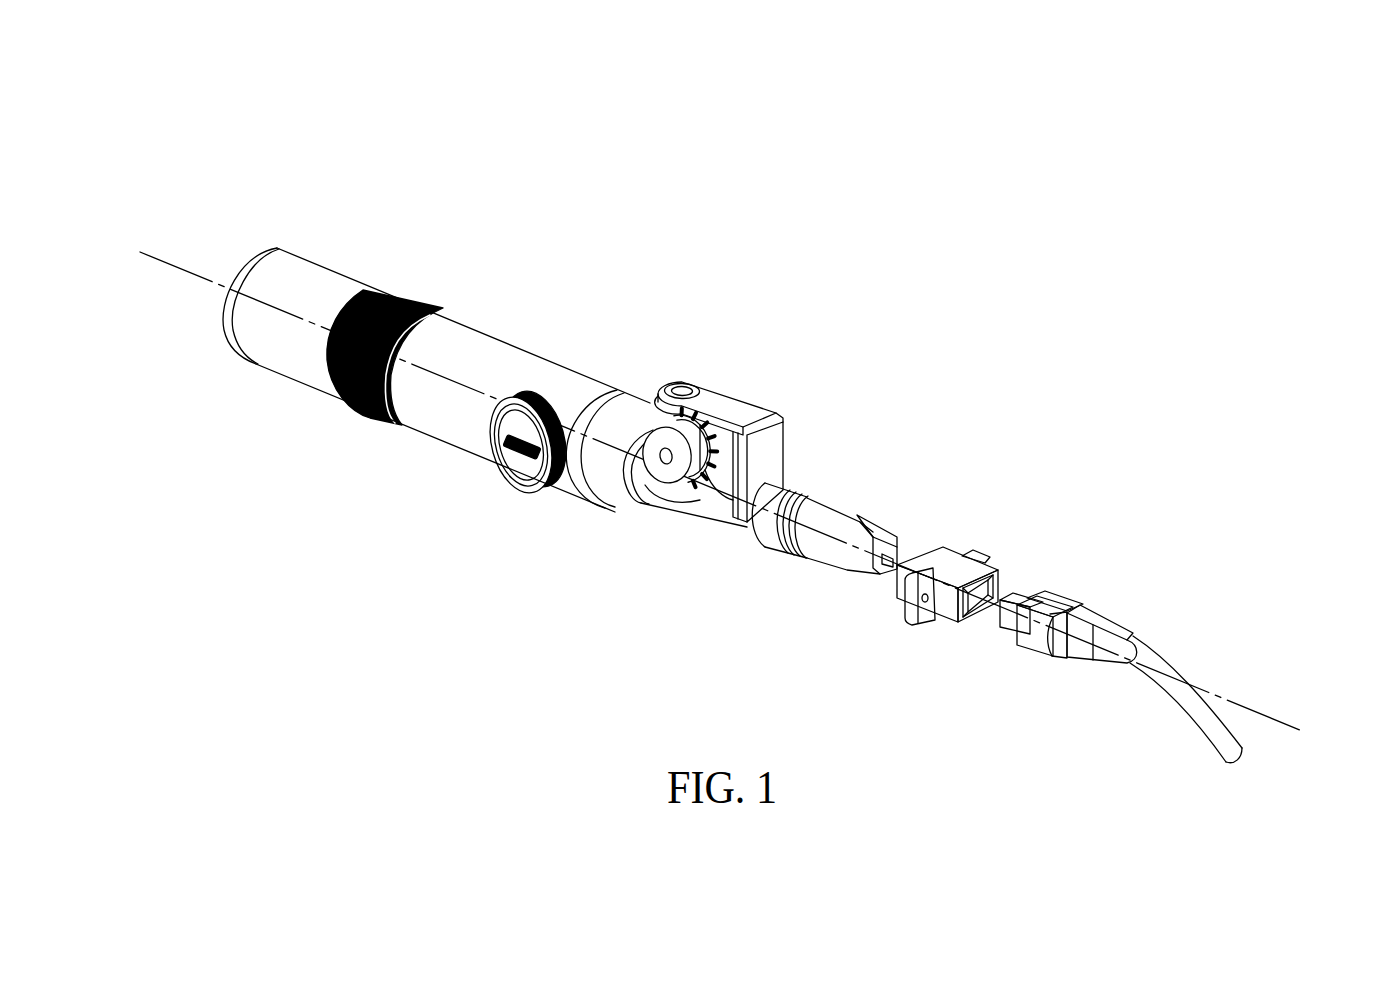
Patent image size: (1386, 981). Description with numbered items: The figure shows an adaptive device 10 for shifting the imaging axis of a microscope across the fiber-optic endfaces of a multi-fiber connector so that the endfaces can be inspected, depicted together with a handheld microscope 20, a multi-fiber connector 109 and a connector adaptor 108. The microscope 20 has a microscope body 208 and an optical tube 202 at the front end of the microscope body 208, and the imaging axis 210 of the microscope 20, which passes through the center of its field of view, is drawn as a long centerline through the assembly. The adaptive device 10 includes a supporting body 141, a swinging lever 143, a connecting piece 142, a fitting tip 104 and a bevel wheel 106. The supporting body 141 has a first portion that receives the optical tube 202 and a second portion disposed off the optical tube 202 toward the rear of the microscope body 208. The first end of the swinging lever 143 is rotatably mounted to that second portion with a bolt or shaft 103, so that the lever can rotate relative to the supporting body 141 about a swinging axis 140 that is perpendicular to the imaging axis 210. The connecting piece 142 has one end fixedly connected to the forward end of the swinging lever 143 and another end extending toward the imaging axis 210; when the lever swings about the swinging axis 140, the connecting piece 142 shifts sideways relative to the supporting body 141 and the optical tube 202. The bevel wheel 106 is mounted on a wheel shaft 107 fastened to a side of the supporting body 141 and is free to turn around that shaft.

The adaptive device 10 is at (770, 390).
The handheld microscope 20 is at (348, 432).
The bolt or shaft 103 is at (692, 377).
The fitting tip 104 is at (850, 510).
The bevel wheel 106 is at (653, 482).
The wheel shaft 107 is at (660, 455).
The connector adaptor 108 is at (943, 603).
The multi-fiber connector 109 is at (1055, 612).
The swinging axis 140 is at (683, 385).
The supporting body 141 is at (717, 500).
The connecting piece 142 is at (768, 452).
The swinging lever 143 is at (723, 400).
The optical tube 202 is at (690, 500).
The microscope body 208 is at (463, 340).
The imaging axis 210 is at (175, 262).